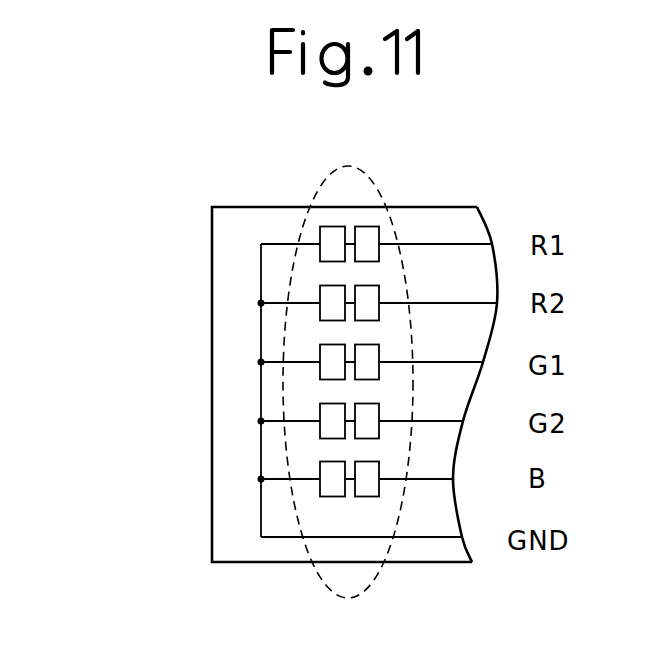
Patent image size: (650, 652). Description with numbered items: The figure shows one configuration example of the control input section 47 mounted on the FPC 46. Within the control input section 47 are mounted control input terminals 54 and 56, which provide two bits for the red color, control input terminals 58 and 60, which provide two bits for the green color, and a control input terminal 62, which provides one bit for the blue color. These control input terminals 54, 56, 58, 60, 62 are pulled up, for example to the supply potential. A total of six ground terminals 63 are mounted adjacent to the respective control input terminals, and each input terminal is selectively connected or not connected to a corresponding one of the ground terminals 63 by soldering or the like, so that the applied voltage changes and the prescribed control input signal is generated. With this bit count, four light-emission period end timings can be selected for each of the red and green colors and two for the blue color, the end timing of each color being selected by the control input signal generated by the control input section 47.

The FPC 46 is at (431, 207).
The control input section 47 is at (318, 195).
The control input terminal 54 is at (366, 256).
The control input terminal 56 is at (366, 316).
The control input terminal 58 is at (364, 376).
The control input terminal 60 is at (364, 435).
The control input terminal 62 is at (364, 490).
The GND terminal 63 is at (334, 232).